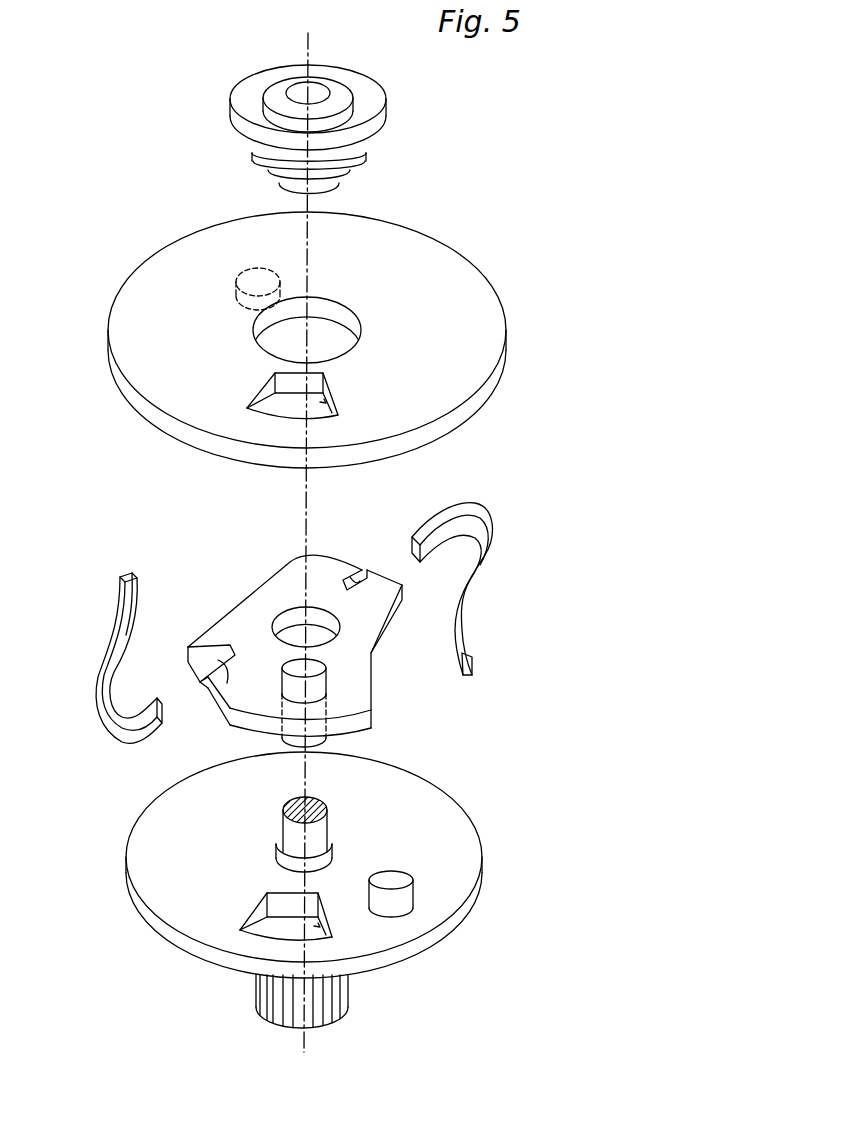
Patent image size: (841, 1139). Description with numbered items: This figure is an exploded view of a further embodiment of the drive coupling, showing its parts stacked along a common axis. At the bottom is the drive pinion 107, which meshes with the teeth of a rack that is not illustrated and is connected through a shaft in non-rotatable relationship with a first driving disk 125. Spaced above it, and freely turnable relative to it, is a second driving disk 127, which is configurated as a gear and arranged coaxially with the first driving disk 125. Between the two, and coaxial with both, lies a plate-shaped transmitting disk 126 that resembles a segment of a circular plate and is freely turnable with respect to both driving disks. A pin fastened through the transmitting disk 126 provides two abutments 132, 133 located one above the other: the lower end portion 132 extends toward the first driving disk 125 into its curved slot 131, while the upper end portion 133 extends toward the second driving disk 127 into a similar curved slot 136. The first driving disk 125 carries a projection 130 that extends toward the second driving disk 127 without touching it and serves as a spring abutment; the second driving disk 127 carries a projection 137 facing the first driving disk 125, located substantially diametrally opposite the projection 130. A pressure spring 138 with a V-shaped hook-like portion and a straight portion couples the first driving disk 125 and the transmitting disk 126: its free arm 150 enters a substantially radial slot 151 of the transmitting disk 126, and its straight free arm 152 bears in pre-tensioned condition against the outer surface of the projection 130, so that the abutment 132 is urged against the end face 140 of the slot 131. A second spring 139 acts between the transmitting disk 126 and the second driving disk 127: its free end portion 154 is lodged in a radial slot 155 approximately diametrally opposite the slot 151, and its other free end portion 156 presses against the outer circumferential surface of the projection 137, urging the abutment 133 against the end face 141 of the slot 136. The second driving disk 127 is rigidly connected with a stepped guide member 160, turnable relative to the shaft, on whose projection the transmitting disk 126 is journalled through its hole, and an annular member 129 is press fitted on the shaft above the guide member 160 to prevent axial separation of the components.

The drive pinion 107 is at (255, 1000).
The first driving disk 125 is at (390, 958).
The transmitting disk 126 is at (357, 682).
The second driving disk 127 is at (123, 318).
The annular member 129 is at (345, 93).
The projection 130 is at (408, 897).
The curved slot 131 is at (295, 930).
The abutment 132 is at (313, 742).
The abutment 133 is at (320, 692).
The curved slot 136 is at (283, 398).
The projection 137 is at (247, 280).
The pressure spring 138 is at (477, 595).
The second spring 139 is at (95, 700).
The end face 140 is at (332, 932).
The end face 141 is at (335, 405).
The free arm 150 is at (430, 528).
The radial slot 151 is at (363, 568).
The straight free arm 152 is at (468, 642).
The free end portion 154 is at (153, 725).
The radial slot 155 is at (210, 688).
The free end portion 156 is at (125, 620).
The stepped guide member 160 is at (257, 133).